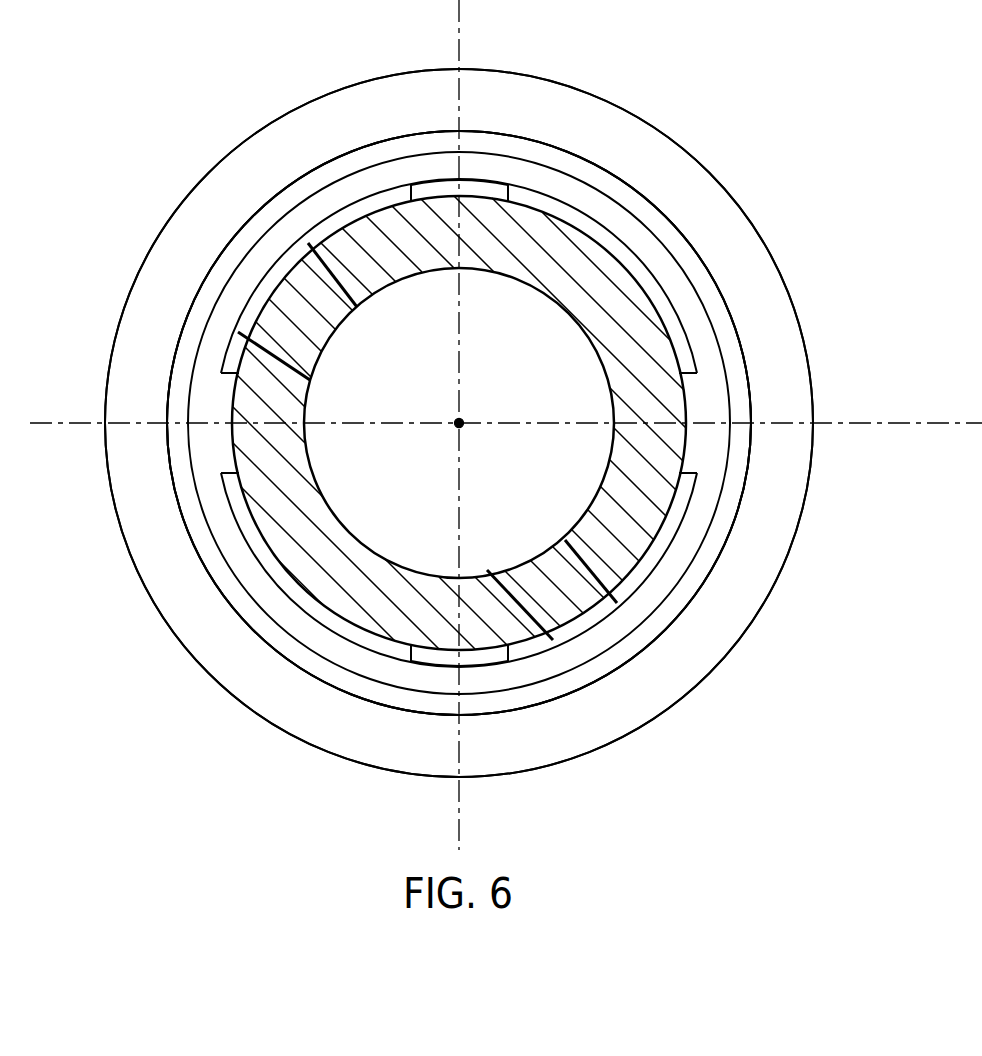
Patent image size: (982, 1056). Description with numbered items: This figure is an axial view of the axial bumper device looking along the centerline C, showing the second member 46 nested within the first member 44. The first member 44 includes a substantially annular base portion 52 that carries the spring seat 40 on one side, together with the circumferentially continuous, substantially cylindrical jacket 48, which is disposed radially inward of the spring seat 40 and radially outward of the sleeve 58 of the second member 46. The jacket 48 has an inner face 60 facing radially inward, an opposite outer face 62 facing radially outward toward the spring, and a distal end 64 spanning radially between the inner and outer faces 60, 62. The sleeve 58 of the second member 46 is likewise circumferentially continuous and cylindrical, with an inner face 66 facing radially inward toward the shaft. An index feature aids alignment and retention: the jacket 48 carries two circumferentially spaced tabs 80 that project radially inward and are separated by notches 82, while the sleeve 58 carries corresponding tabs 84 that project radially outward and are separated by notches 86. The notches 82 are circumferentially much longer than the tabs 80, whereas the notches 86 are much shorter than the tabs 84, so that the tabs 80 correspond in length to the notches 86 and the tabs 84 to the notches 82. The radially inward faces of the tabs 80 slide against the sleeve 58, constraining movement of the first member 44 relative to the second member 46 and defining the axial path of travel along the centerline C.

The spring seat 40 is at (710, 205).
The first member 44 is at (285, 103).
The second member 46 is at (530, 540).
The jacket 48 is at (755, 367).
The base portion 52 is at (800, 288).
The sleeve 58 is at (573, 502).
The inner face 60 is at (680, 317).
The outer face 62 is at (728, 308).
The distal end 64 is at (623, 223).
The inner face 66 is at (357, 537).
The tabs 80 is at (222, 445).
The notches 82 is at (357, 306).
The tabs 84 is at (311, 380).
The notches 86 is at (487, 187).
The centerline C is at (461, 418).